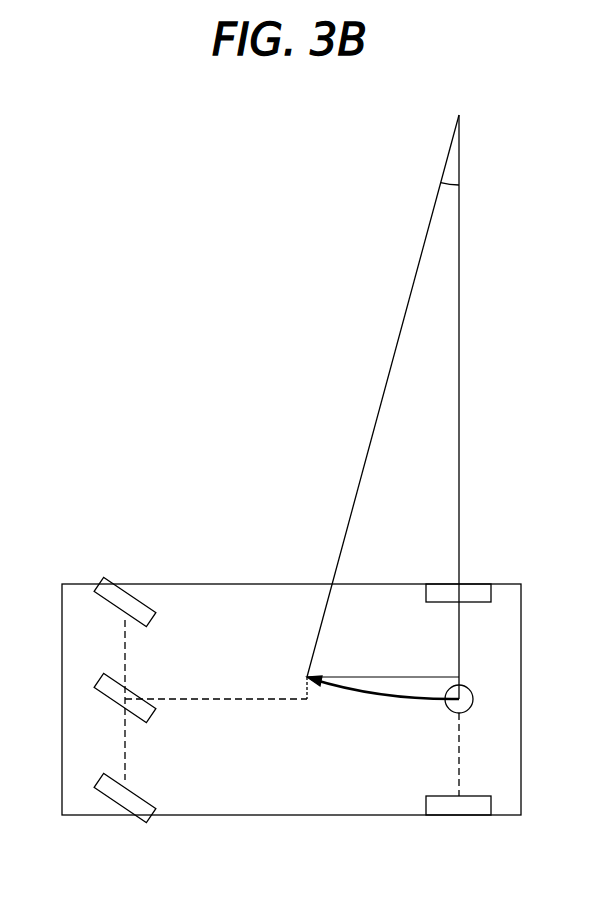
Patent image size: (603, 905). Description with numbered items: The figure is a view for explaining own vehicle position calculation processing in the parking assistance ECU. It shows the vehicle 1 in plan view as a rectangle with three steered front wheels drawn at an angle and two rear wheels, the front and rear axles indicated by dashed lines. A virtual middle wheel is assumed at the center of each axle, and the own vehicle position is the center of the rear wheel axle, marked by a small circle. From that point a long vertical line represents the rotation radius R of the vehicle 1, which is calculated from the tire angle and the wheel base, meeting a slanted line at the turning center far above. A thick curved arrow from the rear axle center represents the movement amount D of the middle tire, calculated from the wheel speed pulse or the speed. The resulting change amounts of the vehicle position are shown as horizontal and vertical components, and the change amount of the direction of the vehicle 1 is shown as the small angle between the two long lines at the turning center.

The vehicle 1 is at (521, 758).
The rotation radius R is at (472, 407).
The movement amount of the middle tire D is at (345, 691).